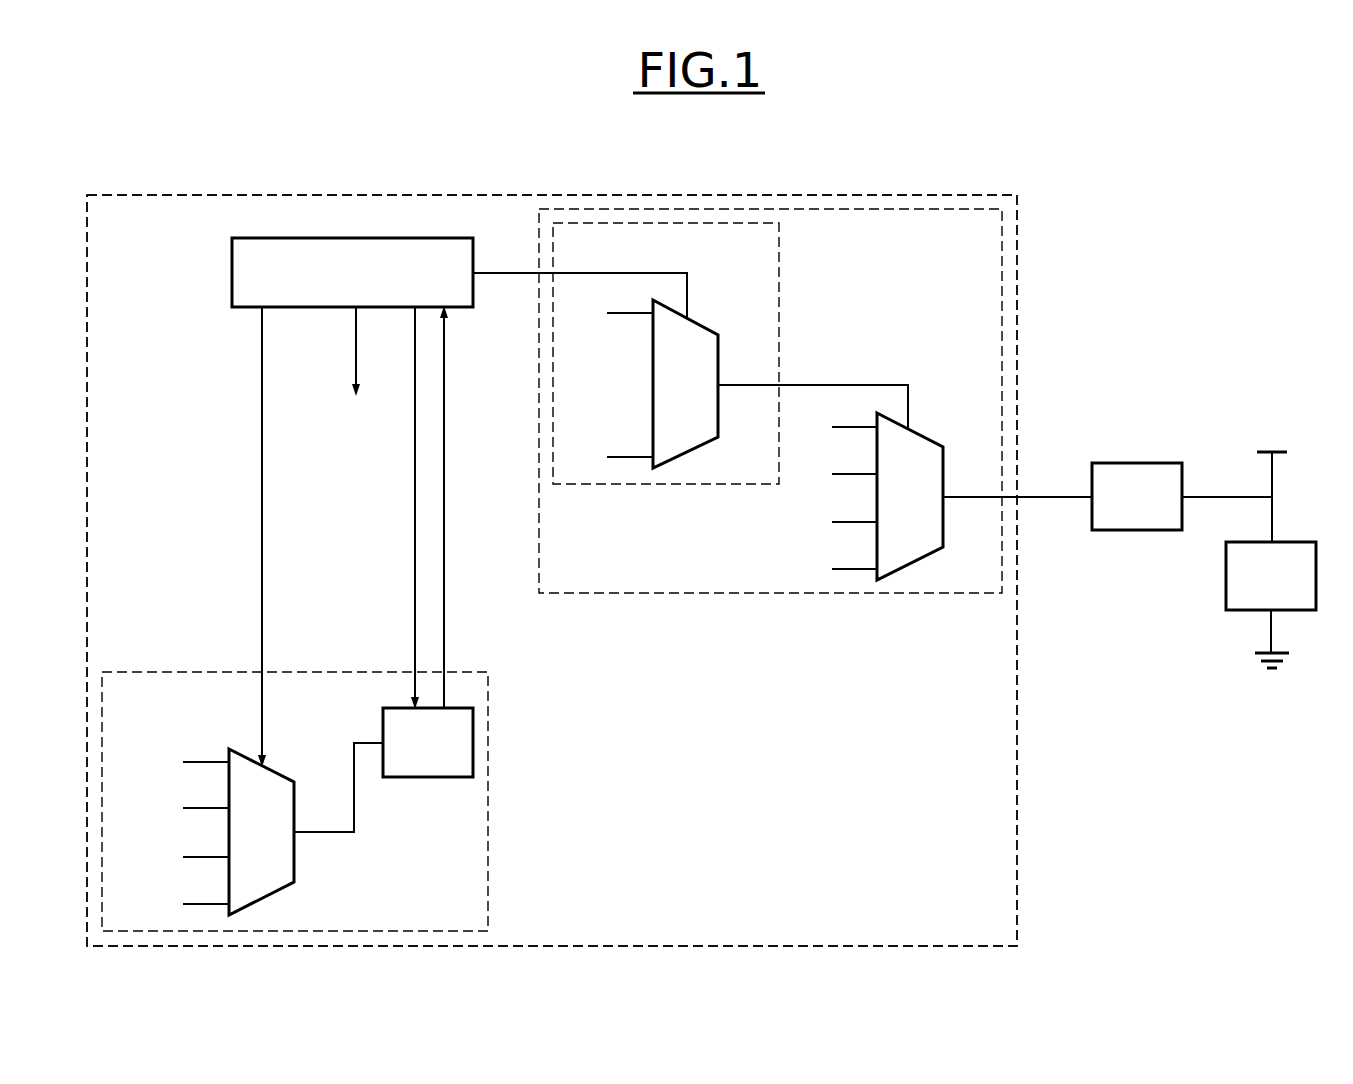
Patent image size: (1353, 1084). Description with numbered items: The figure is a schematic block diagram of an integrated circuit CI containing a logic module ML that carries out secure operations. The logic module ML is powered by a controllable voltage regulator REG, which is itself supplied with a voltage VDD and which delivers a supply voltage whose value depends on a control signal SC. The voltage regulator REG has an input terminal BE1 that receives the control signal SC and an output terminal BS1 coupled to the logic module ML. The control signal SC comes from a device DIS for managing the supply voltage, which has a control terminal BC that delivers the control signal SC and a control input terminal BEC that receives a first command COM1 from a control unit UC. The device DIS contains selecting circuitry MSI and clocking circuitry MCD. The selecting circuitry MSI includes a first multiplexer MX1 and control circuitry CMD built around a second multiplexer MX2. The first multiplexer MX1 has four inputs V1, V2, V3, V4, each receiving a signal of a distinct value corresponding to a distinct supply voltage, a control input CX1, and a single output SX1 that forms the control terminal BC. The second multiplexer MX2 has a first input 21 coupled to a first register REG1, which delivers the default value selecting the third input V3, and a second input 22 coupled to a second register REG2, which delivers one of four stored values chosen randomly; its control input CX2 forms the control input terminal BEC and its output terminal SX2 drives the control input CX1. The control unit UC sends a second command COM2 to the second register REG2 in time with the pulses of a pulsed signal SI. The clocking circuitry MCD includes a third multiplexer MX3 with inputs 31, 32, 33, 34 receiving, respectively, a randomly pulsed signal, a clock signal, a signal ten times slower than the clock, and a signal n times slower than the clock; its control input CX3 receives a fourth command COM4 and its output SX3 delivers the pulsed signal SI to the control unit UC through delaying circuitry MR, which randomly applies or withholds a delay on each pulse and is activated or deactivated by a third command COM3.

The integrated circuit CI is at (1199, 156).
The device DIS is at (1017, 752).
The control unit UC is at (352, 272).
The control input terminal BEC is at (533, 268).
The first command COM1 is at (593, 262).
The second command COM2 is at (353, 371).
The third command COM3 is at (401, 497).
The fourth command COM4 is at (252, 451).
The pulsed signal SI is at (456, 622).
The selecting circuitry MSI is at (539, 403).
The control circuitry CMD is at (667, 485).
The second multiplexer MX2 is at (718, 350).
The control input CX2 is at (688, 315).
The output terminal SX2 is at (718, 387).
The first input 21 is at (615, 314).
The second input 22 is at (615, 458).
The first register REG1 is at (595, 336).
The second register REG2 is at (593, 484).
The first multiplexer MX1 is at (943, 462).
The control input CX1 is at (910, 428).
The output SX1 is at (943, 498).
The first input V1 is at (836, 428).
The second input V2 is at (836, 475).
The third input V3 is at (836, 523).
The fourth input V4 is at (836, 570).
The control terminal BC is at (1016, 497).
The input terminal BE1 is at (1091, 496).
The control signal SC is at (1040, 512).
The voltage regulator REG is at (1137, 496).
The output terminal BS1 is at (1182, 494).
The voltage VDD is at (1271, 483).
The logic module ML is at (1271, 605).
The clocking circuitry MCD is at (180, 672).
The third multiplexer MX3 is at (294, 797).
The control input CX3 is at (260, 763).
The output SX3 is at (294, 833).
The first input 31 is at (190, 763).
The second input 32 is at (190, 809).
The third input 33 is at (190, 858).
The fourth input 34 is at (190, 905).
The delaying circuitry MR is at (428, 742).